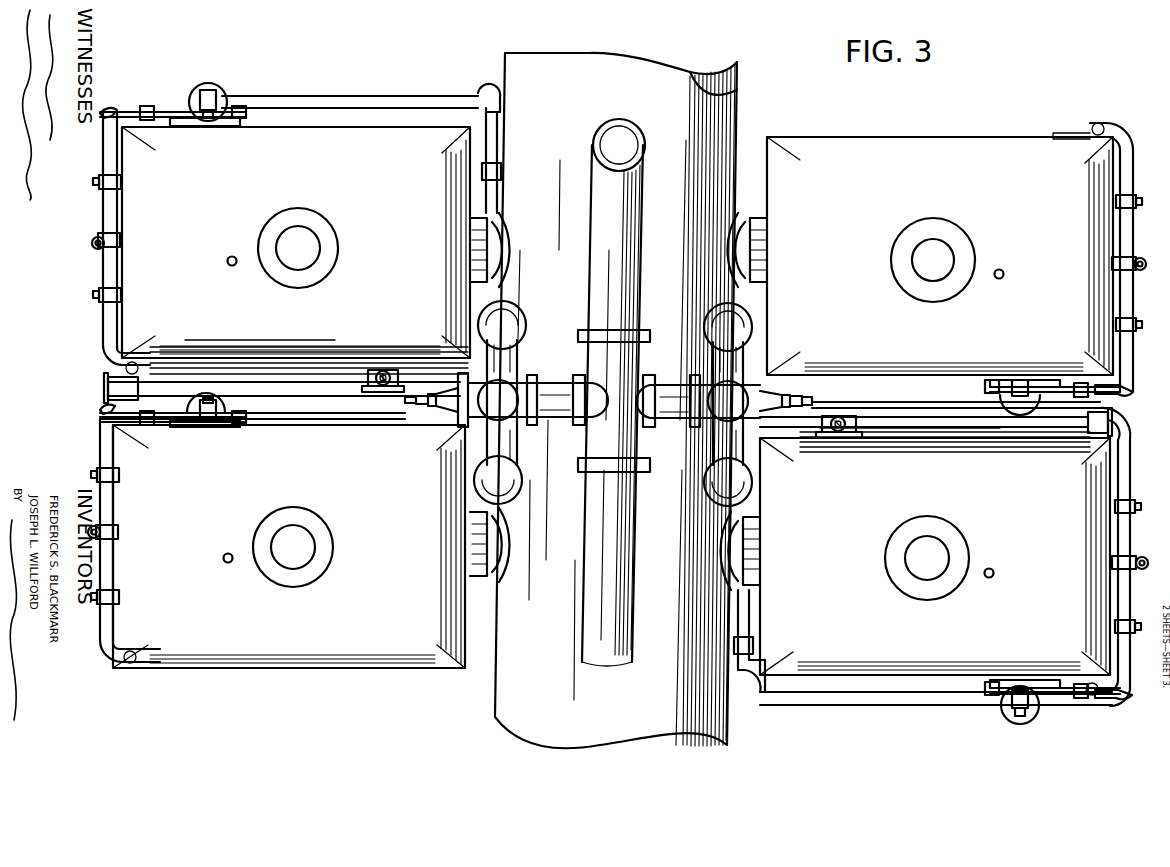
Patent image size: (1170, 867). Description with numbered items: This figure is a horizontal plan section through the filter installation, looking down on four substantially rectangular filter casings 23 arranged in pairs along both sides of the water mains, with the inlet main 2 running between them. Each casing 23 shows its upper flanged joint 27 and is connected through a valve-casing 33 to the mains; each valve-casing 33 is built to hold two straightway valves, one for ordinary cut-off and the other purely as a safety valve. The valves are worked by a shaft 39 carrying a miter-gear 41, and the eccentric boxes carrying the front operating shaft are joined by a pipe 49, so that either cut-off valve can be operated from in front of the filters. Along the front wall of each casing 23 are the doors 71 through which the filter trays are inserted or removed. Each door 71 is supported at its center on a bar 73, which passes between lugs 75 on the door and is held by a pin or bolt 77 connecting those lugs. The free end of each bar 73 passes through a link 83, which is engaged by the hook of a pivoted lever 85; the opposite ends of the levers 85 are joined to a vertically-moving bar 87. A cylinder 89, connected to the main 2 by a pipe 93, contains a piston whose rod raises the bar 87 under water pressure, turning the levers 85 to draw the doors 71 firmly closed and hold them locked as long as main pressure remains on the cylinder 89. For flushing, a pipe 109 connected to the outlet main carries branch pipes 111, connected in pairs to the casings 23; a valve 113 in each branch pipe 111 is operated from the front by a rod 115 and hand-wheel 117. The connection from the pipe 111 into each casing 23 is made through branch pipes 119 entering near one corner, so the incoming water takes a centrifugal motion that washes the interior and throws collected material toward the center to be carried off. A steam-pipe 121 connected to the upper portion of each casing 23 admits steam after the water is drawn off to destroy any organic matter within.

The pipe, main, or conductor 2 is at (616, 400).
The casing 23 is at (613, 401).
The flanged joint 27 is at (332, 256).
The valve-casing 33 is at (494, 240).
The shaft 39 is at (381, 368).
The miter-gear 41 is at (382, 388).
The pipe 49 is at (256, 368).
The door 71 is at (118, 220).
The bar 73 is at (108, 273).
The lug 75 is at (100, 241).
The pin or bolt 77 is at (96, 246).
The link 83 is at (120, 117).
The lever 85 is at (168, 114).
The vertically-moving bar 87 is at (212, 112).
The cylinder 89 is at (220, 100).
The pipe 93 is at (322, 100).
The pipe 109 is at (592, 272).
The branch pipe 111 is at (552, 420).
The valve 113 is at (436, 400).
The rod 115 is at (340, 400).
The hand-wheel 117 is at (104, 391).
The branch pipe 119 is at (500, 358).
The steam-pipe 121 is at (230, 268).